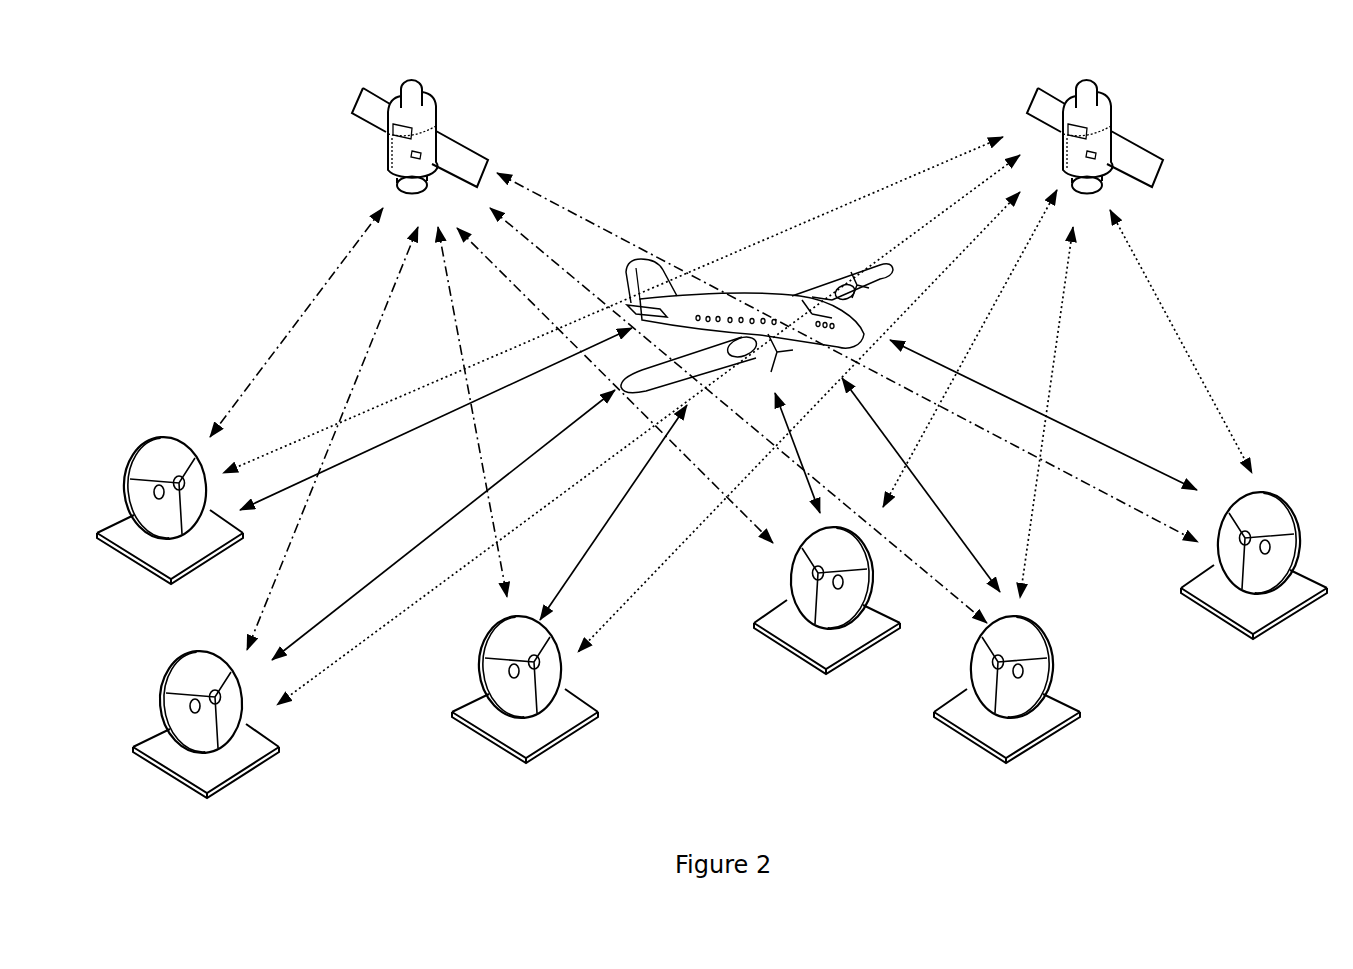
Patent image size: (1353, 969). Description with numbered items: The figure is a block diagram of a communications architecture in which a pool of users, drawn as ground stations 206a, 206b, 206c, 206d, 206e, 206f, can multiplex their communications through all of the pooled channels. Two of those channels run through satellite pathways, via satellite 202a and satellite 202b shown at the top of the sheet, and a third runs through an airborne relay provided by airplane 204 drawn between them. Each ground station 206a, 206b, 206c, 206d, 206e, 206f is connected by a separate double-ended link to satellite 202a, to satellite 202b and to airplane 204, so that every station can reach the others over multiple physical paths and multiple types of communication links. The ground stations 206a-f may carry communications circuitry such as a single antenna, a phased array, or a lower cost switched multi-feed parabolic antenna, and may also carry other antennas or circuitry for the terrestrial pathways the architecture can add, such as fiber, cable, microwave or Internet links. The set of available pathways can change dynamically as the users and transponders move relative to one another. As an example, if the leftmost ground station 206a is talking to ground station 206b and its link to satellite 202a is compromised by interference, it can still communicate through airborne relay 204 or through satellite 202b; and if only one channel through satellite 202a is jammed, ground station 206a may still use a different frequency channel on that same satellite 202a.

The satellite 202a is at (463, 128).
The satellite 202b is at (1128, 120).
The airplane 204 is at (773, 280).
The ground station 206a is at (172, 432).
The ground station 206b is at (283, 732).
The ground station 206c is at (595, 688).
The ground station 206d is at (858, 563).
The ground station 206e is at (1057, 680).
The ground station 206f is at (1188, 580).